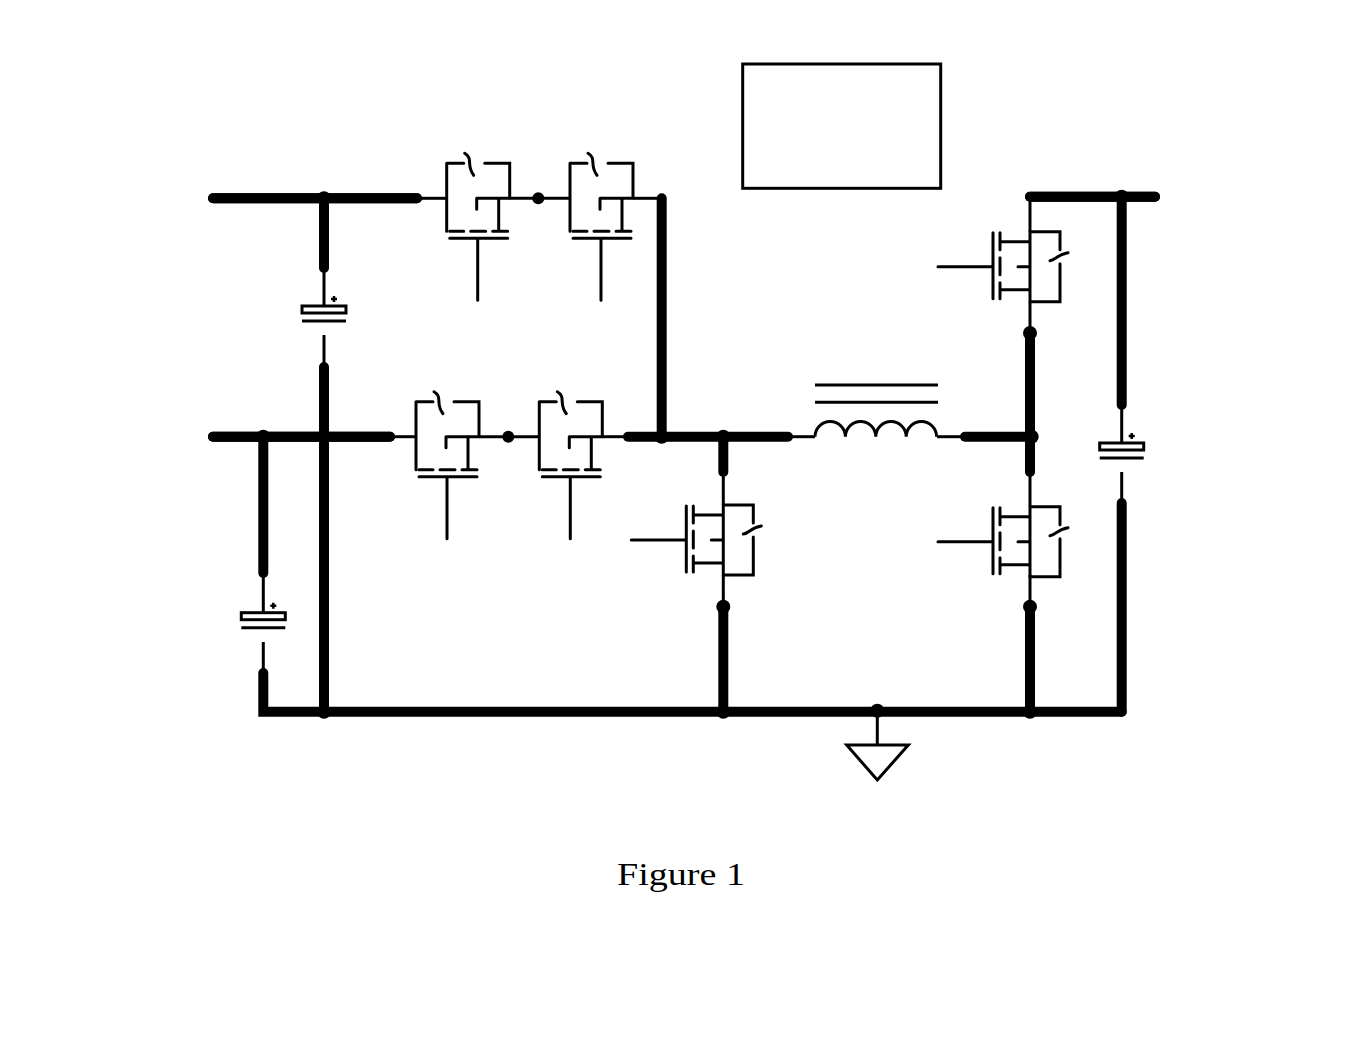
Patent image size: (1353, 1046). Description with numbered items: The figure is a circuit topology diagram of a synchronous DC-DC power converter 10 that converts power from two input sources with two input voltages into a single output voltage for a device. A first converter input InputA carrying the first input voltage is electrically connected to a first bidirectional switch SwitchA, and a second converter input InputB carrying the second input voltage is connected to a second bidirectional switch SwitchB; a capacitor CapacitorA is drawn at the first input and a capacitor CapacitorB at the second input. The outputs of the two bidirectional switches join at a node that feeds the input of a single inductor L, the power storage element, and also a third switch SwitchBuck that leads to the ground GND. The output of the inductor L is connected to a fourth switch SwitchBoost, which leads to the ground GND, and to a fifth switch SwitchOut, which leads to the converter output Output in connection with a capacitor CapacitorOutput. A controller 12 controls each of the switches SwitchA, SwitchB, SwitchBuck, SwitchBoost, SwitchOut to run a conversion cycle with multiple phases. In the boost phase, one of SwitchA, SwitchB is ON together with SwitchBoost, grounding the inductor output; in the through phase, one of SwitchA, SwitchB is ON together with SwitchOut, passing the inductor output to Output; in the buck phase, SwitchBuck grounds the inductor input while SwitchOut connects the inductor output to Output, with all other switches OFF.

The synchronous DC-DC power converter 10 is at (285, 45).
The controller 12 is at (793, 156).
The inductor L is at (876, 393).
The first converter input InputA is at (263, 201).
The second converter input InputB is at (251, 439).
The converter output Output is at (1137, 201).
The first bidirectional switch SwitchA is at (540, 200).
The second bidirectional switch SwitchB is at (509, 500).
The third switch SwitchBuck is at (743, 524).
The fourth switch SwitchBoost is at (973, 573).
The fifth switch SwitchOut is at (1026, 218).
The capacitor A CapacitorA is at (274, 454).
The capacitor B CapacitorB is at (213, 555).
The capacitor CapacitorOutput is at (1213, 454).
The ground GND is at (878, 761).